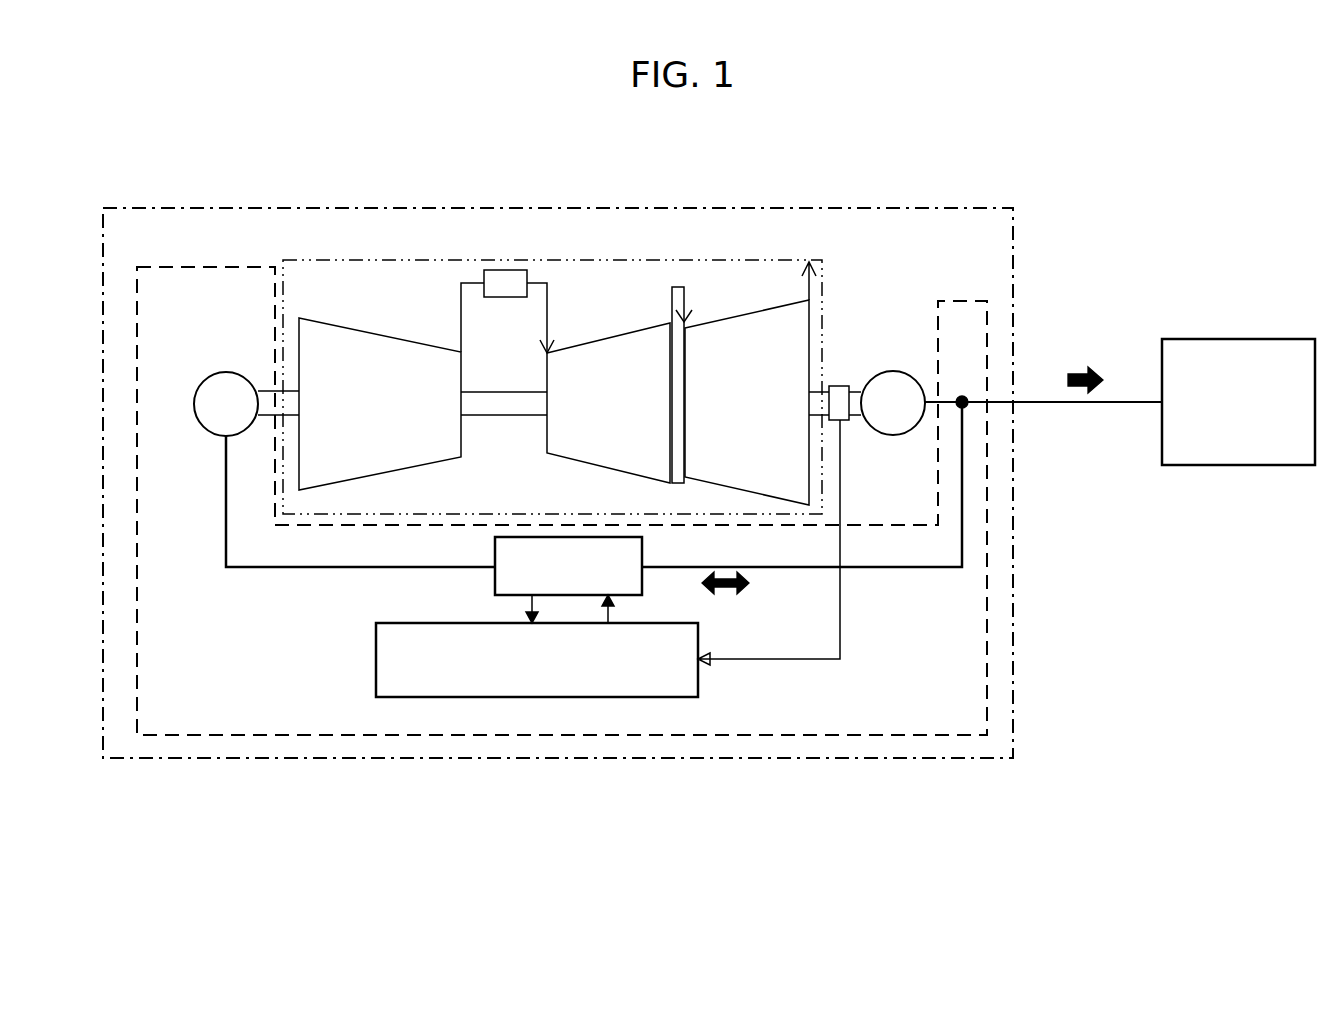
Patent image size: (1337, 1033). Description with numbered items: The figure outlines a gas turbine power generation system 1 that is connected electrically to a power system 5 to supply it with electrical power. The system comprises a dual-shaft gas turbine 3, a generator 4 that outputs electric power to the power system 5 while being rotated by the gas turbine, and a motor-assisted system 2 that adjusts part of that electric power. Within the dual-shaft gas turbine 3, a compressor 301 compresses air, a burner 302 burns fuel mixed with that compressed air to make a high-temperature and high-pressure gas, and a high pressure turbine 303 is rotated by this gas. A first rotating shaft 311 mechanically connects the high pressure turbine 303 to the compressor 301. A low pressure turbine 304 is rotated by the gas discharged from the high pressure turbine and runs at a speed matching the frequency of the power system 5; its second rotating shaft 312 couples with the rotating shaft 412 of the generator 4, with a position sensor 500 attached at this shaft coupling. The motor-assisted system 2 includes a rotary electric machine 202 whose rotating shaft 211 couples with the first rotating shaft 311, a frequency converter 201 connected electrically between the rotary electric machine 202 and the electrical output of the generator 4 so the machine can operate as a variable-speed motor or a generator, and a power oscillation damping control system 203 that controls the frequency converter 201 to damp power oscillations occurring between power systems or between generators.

The gas turbine power generation system 1 is at (173, 208).
The motor-assisted system 2 is at (210, 267).
The dual-shaft gas turbine 3 is at (665, 260).
The generator 4 is at (892, 372).
The power system 5 is at (1245, 337).
The frequency converter 201 is at (495, 580).
The rotary electric machine 202 is at (210, 425).
The power oscillation damping control system 203 is at (376, 657).
The rotating shaft 211 is at (255, 446).
The compressor 301 is at (392, 338).
The burner 302 is at (506, 270).
The high pressure turbine 303 is at (595, 340).
The low pressure turbine 304 is at (732, 318).
The first rotating shaft 311 is at (290, 400).
The second rotating shaft 312 is at (817, 412).
The rotating shaft 412 is at (858, 421).
The position sensor 500 is at (840, 388).